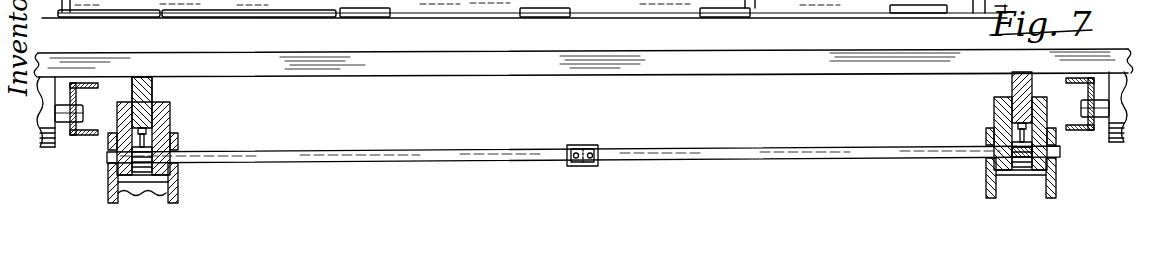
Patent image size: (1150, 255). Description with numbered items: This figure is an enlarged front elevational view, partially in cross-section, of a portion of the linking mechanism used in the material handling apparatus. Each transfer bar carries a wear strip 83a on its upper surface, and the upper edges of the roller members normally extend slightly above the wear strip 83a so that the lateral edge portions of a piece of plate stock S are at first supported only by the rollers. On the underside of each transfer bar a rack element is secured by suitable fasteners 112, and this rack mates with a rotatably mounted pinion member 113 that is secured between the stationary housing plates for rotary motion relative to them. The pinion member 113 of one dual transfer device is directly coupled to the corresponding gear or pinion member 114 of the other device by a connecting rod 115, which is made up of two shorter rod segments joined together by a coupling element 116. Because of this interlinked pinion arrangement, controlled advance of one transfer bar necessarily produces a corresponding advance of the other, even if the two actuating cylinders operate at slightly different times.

The piece of plate stock S is at (557, 66).
The wear strip 83a is at (142, 77).
The fastener 112 is at (144, 138).
The pinion member 113 is at (155, 170).
The nut 114 is at (1022, 166).
The connecting rod 115 is at (490, 162).
The coupling element 116 is at (582, 167).